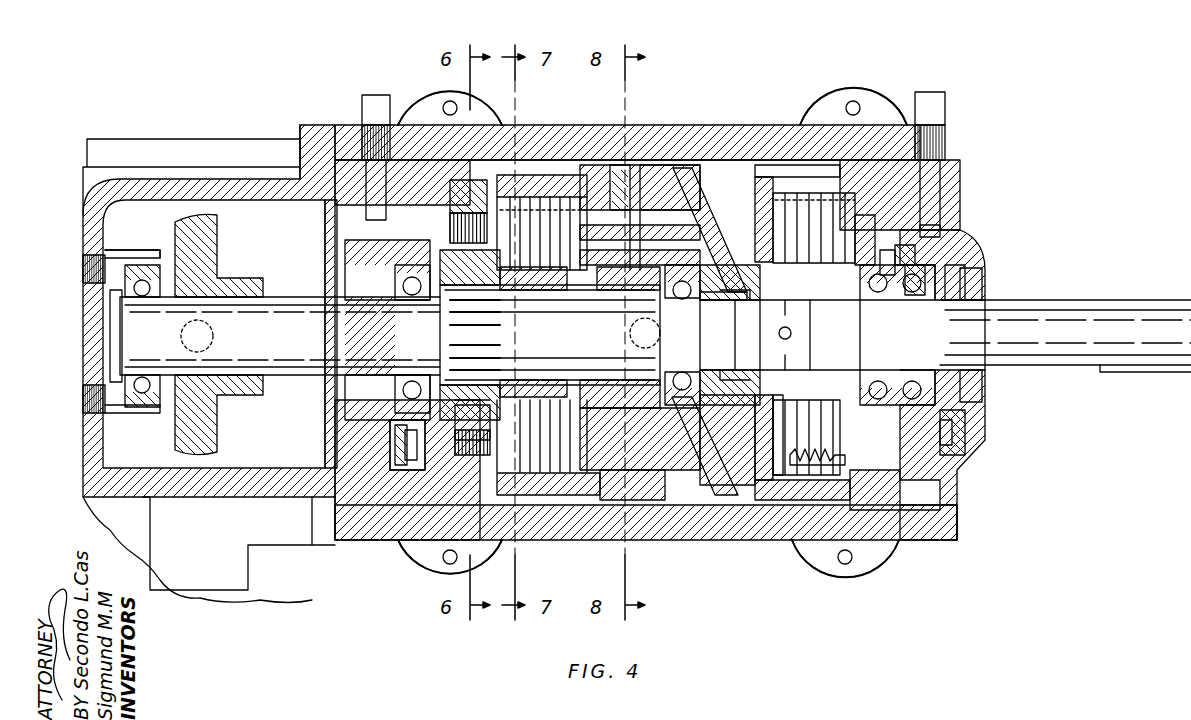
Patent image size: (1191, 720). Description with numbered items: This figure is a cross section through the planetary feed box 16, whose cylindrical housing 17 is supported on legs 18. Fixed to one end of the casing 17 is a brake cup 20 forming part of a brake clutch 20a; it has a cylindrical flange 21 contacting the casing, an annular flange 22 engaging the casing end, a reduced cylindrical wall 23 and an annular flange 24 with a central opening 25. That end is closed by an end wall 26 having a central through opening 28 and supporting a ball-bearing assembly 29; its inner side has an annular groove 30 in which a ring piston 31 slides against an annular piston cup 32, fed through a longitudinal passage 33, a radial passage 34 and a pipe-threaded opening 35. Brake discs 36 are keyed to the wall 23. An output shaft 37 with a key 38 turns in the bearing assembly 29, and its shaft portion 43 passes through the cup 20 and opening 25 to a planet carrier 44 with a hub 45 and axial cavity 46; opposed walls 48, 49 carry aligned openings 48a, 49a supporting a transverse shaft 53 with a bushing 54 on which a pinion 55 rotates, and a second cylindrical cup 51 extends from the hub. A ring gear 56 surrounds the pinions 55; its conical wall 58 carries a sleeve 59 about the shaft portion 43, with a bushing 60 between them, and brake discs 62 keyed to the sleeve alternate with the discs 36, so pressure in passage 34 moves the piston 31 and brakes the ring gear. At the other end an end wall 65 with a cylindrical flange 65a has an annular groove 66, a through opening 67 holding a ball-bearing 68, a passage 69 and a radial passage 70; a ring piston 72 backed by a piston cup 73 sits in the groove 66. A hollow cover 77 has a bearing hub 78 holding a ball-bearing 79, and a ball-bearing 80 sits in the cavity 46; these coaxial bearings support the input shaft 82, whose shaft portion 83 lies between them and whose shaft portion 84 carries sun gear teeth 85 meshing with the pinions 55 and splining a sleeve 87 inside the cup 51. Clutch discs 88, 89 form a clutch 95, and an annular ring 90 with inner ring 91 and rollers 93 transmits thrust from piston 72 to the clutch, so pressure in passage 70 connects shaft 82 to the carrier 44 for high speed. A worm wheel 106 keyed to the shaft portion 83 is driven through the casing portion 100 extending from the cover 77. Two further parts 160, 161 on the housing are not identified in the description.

The planetary feed box 16 is at (795, 565).
The cylindrical housing 17 is at (712, 135).
The legs 18 is at (420, 110).
The brake cup 20 is at (760, 177).
The clutch 20a is at (765, 177).
The cylindrical flange 21 is at (860, 500).
The annular flange 22 is at (905, 540).
The reduced cylindrical wall 23 is at (790, 485).
The annular flange 24 is at (760, 455).
The central opening 25 is at (775, 415).
The end wall 26 is at (945, 470).
The central through opening 28 is at (970, 290).
The axial ball-bearing assembly 29 is at (975, 250).
The annular groove 30 is at (965, 432).
The ring piston 31 is at (925, 185).
The annular piston cup 32 is at (920, 215).
The longitudinal passage 33 is at (950, 240).
The radial passage 34 is at (930, 165).
The pipe-threaded opening 35 is at (925, 115).
The brake discs 36 is at (800, 193).
The axial output shaft 37 is at (1095, 302).
The key 38 is at (1150, 375).
The shaft portion 43 is at (737, 265).
The planet carrier 44 is at (573, 500).
The hub 45 is at (670, 430).
The axial cavity 46 is at (635, 400).
The opposed wall 48 is at (690, 190).
The through opening 48a is at (700, 220).
The opposed wall 49 is at (590, 175).
The through opening 49a is at (605, 165).
The second cylindrical cup 51 is at (540, 175).
The transverse shaft 53 is at (670, 160).
The bushing 54 is at (655, 165).
The pinion 55 is at (640, 165).
The ring gear 56 is at (645, 500).
The conical wall 58 is at (718, 480).
The sleeve 59 is at (830, 262).
The bushing 60 is at (760, 350).
The brake discs 62 is at (805, 425).
The end wall 65 is at (355, 545).
The cylindrical flange 65a is at (470, 180).
The annular groove 66 is at (395, 440).
The central through opening 67 is at (380, 285).
The ball-bearing 68 is at (400, 282).
The passage 69 is at (335, 240).
The radial passage 70 is at (345, 175).
The ring piston 72 is at (450, 430).
The piston cup 73 is at (410, 455).
The hollow cover 77 is at (185, 179).
The bearing hub 78 is at (140, 250).
The ball-bearing 79 is at (135, 383).
The ball-bearing 80 is at (688, 275).
The input shaft 82 is at (110, 325).
The shaft portion 83 is at (290, 345).
The shaft portion 84 is at (610, 348).
The external gear teeth 85 is at (540, 340).
The sleeve 87 is at (505, 285).
The clutch disc 88 is at (516, 250).
The clutch disc 89 is at (525, 175).
The annular ring 90 is at (510, 100).
The inner ring 91 is at (470, 425).
The roller 93 is at (475, 445).
The clutch 95 is at (545, 497).
The casing portion 100 is at (270, 590).
The worm wheel 106 is at (222, 262).
The bolt 160 is at (372, 95).
The bolt 161 is at (935, 92).